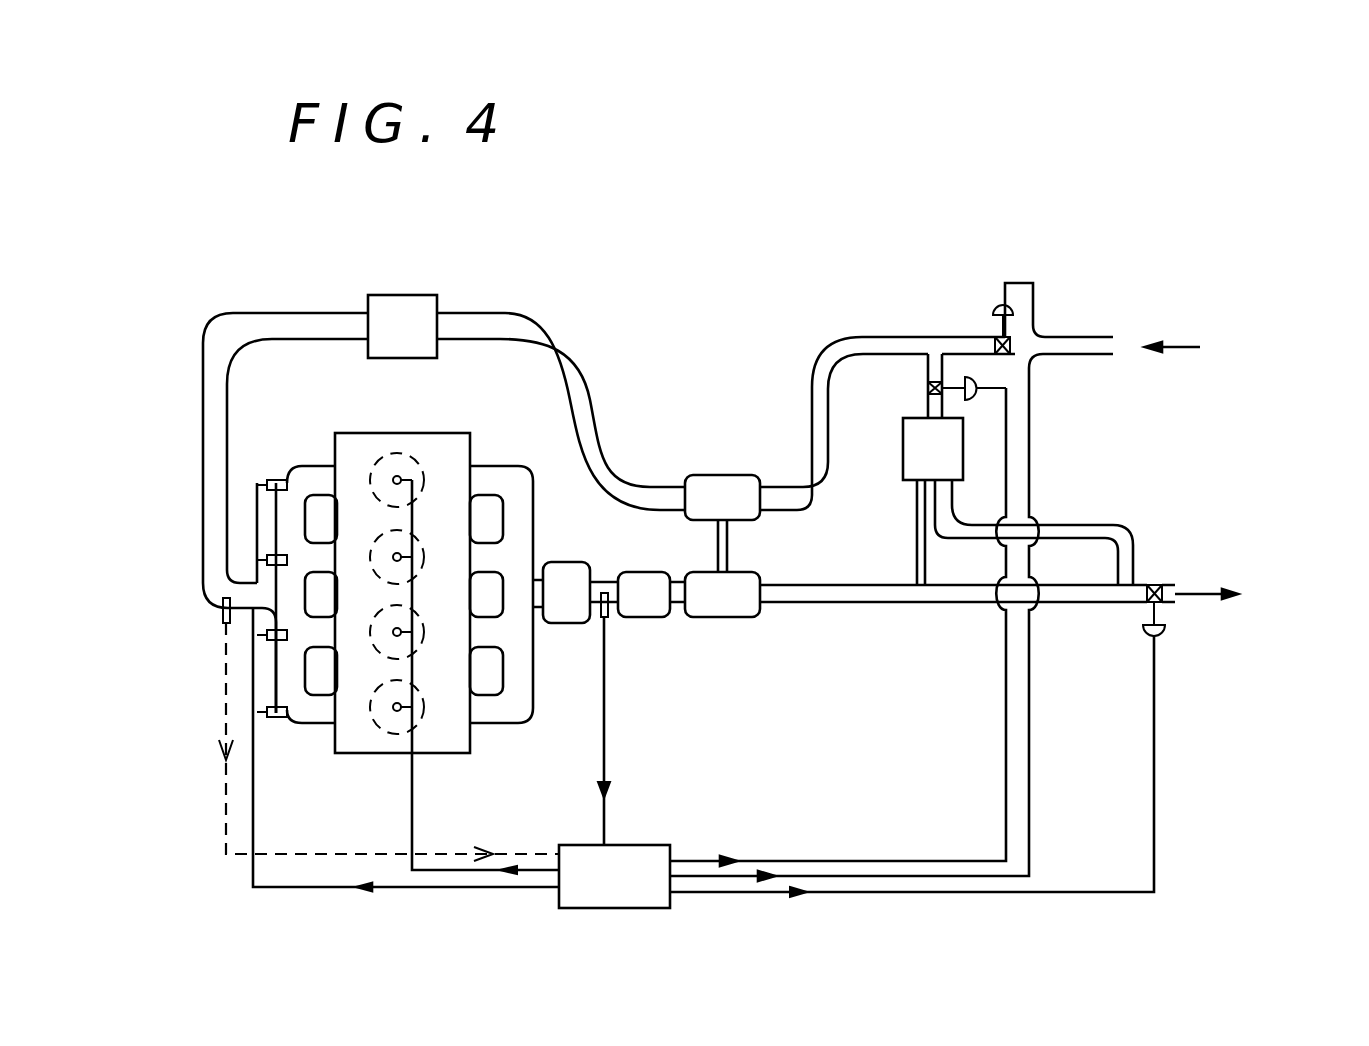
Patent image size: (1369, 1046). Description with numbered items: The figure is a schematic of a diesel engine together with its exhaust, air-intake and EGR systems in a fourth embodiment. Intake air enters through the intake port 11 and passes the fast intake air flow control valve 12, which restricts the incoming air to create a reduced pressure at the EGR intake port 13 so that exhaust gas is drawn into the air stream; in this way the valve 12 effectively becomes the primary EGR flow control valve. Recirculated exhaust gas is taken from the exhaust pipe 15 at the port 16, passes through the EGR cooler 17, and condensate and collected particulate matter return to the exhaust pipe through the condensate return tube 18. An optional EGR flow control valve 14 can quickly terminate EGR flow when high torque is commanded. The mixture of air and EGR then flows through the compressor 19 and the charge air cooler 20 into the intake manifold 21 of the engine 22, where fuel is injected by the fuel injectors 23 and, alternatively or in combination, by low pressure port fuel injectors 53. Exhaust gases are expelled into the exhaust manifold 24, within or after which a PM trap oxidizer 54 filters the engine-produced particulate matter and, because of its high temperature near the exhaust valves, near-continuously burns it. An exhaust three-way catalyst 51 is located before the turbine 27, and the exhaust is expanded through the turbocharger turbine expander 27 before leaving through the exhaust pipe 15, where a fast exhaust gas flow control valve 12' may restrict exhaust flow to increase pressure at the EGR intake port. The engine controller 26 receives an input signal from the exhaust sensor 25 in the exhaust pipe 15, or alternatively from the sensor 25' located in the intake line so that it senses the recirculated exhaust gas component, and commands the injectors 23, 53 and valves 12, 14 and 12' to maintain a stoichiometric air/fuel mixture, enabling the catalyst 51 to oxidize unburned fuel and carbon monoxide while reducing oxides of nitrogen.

The intake port 11 is at (1112, 343).
The fast intake air flow control valve 12 is at (966, 306).
The fast exhaust gas flow control valve 12' is at (968, 741).
The EGR intake port 13 is at (935, 363).
The EGR flow control valve 14 is at (975, 400).
The exhaust pipe 15 is at (1070, 602).
The port 16 is at (1137, 590).
The EGR cooler 17 is at (910, 452).
The condensate return tube 18 is at (916, 560).
The compressor 19 is at (722, 490).
The charge air cooler 20 is at (403, 295).
The intake manifold 21 is at (322, 470).
The engine 22 is at (383, 752).
The fuel injectors 23 is at (398, 477).
The exhaust manifold 24 is at (520, 475).
The exhaust component sensor 25 is at (625, 719).
The exhaust sensor 25' is at (340, 729).
The engine controller 26 is at (608, 855).
The turbocharger turbine expander 27 is at (722, 610).
The exhaust 3-way catalyst 51 is at (632, 590).
The low pressure port fuel injectors 53 is at (287, 490).
The PM trap oxidizer 54 is at (567, 565).